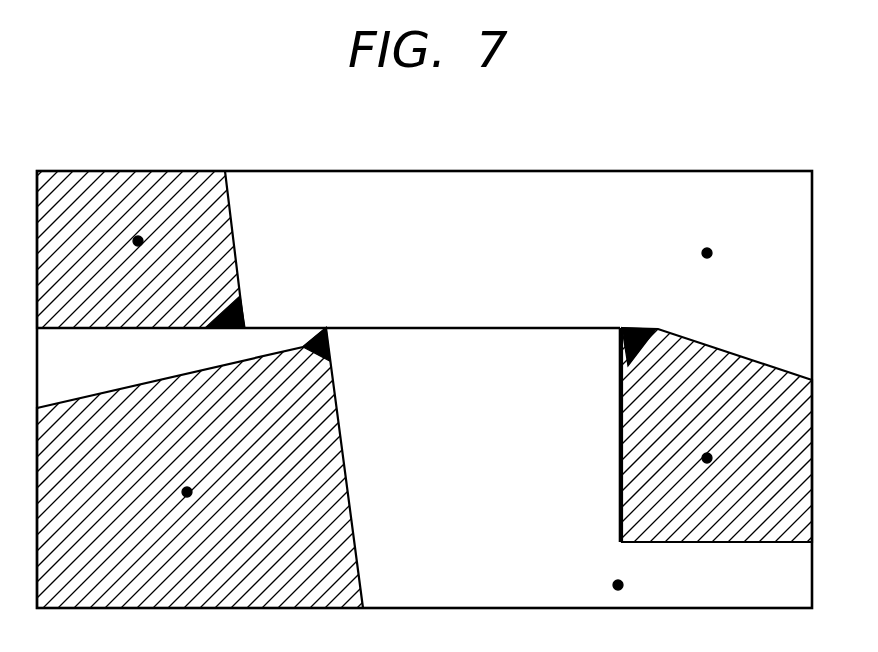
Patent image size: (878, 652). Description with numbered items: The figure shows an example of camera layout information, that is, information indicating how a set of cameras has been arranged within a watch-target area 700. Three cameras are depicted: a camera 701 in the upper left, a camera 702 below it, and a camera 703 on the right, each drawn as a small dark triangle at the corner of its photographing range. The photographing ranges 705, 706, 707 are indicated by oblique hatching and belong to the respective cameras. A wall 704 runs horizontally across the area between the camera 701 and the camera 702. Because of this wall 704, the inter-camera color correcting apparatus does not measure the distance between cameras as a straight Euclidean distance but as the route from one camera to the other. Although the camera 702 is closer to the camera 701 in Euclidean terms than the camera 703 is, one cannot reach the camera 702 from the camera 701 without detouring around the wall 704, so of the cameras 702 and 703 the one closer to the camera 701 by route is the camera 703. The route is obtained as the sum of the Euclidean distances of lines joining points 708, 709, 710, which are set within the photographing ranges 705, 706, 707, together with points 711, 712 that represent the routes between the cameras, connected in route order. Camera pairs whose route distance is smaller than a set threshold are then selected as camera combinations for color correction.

The watch-target area 700 is at (50, 171).
The camera 701 is at (246, 322).
The camera 702 is at (328, 345).
The camera 703 is at (650, 330).
The wall 704 is at (505, 326).
The photographing range 705 is at (234, 232).
The photographing range 706 is at (756, 360).
The photographing range 707 is at (345, 492).
The point 708 is at (138, 236).
The point 709 is at (701, 460).
The point 710 is at (186, 489).
The point representative of route 711 is at (708, 249).
The point representative of route 712 is at (624, 585).